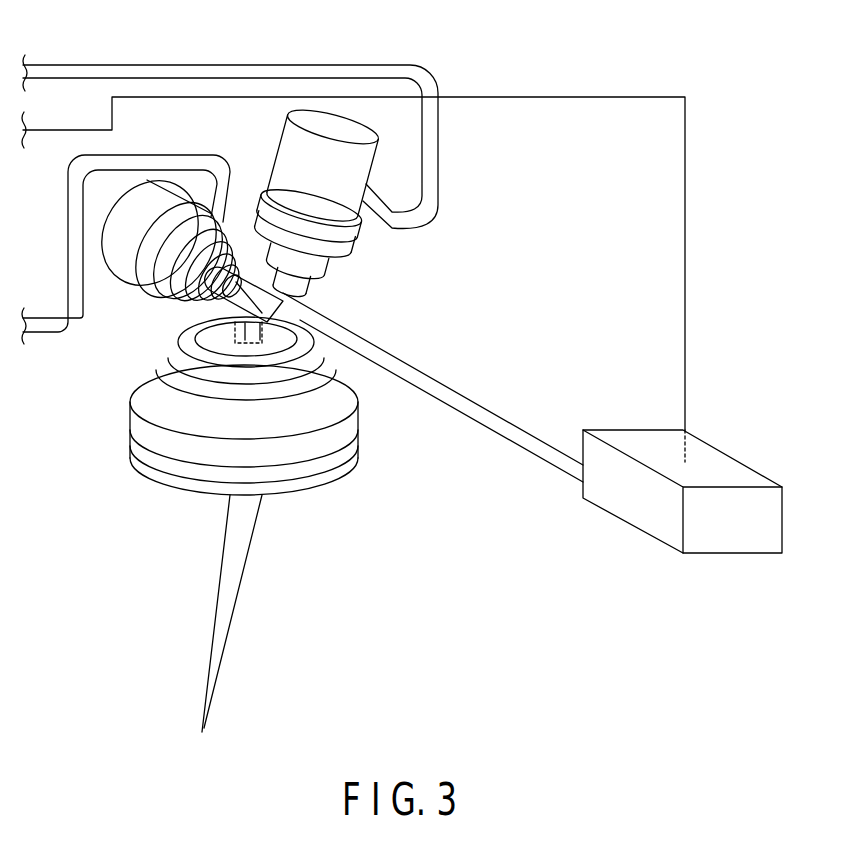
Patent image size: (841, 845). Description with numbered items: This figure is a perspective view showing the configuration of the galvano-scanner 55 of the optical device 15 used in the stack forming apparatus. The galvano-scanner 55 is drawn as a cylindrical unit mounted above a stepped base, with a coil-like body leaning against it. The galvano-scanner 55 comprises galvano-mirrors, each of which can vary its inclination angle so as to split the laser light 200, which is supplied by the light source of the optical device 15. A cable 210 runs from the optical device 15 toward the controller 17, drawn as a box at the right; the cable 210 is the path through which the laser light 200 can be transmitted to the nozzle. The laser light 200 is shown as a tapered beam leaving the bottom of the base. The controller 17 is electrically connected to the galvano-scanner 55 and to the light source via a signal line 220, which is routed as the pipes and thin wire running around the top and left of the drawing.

The signal line 220 is at (415, 63).
The galvano-scanner 55 is at (330, 290).
The optical device 15 is at (395, 303).
The laser light 200 is at (248, 555).
The cable 210 is at (492, 405).
The controller 17 is at (730, 463).